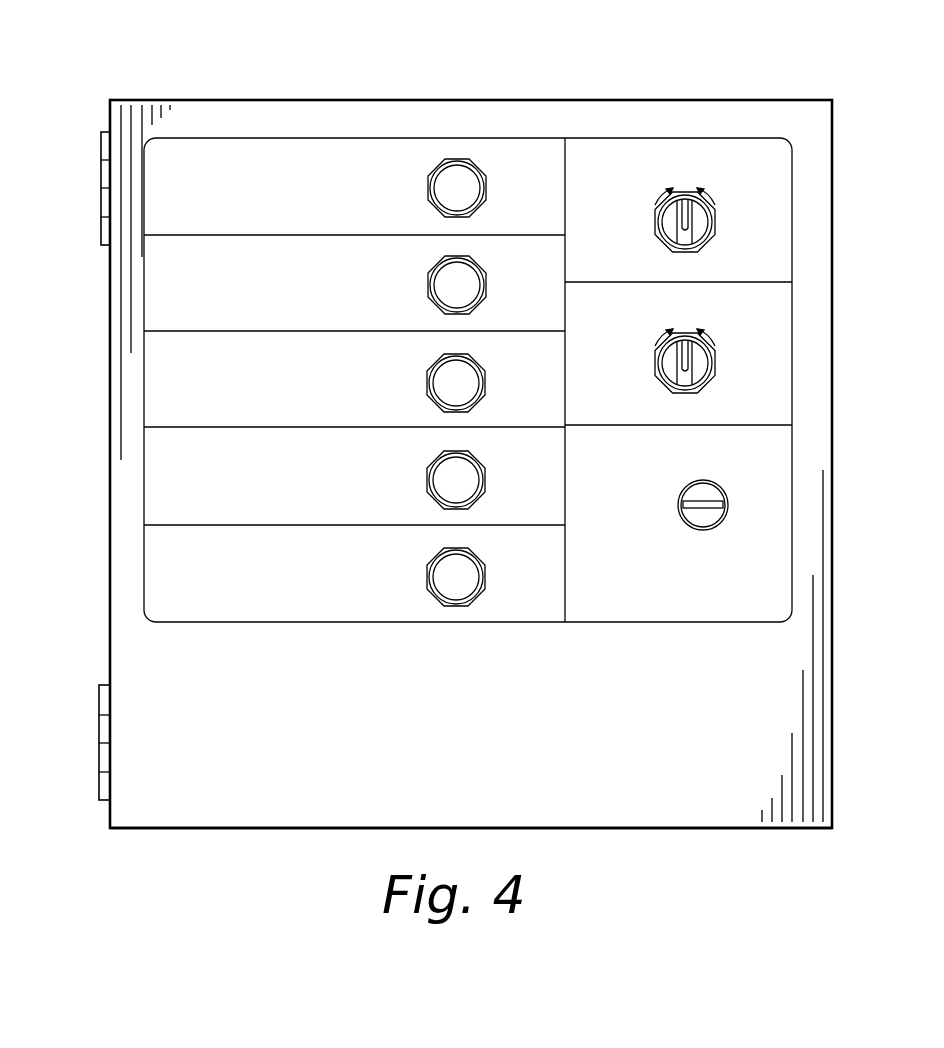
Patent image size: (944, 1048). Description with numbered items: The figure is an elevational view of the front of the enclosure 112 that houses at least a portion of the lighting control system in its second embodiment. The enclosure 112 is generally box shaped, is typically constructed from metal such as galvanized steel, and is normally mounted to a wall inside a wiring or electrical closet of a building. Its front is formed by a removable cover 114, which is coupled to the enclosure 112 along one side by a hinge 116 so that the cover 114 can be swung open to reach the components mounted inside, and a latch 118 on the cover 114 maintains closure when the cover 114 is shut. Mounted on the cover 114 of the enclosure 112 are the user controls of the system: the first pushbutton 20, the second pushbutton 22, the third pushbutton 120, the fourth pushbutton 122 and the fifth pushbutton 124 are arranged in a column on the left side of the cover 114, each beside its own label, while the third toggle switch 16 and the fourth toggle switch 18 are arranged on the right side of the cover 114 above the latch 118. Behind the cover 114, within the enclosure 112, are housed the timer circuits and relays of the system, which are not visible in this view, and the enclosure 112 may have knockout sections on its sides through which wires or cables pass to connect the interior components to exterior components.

The enclosure 112 is at (555, 56).
The removable cover 114 is at (275, 817).
The hinge 116 is at (101, 187).
The latch 118 is at (713, 530).
The third toggle switch 16 is at (657, 226).
The fourth toggle switch 18 is at (706, 382).
The first pushbutton 20 is at (428, 211).
The second pushbutton 22 is at (428, 293).
The third pushbutton 120 is at (428, 404).
The fourth pushbutton 122 is at (428, 492).
The fifth pushbutton 124 is at (482, 587).